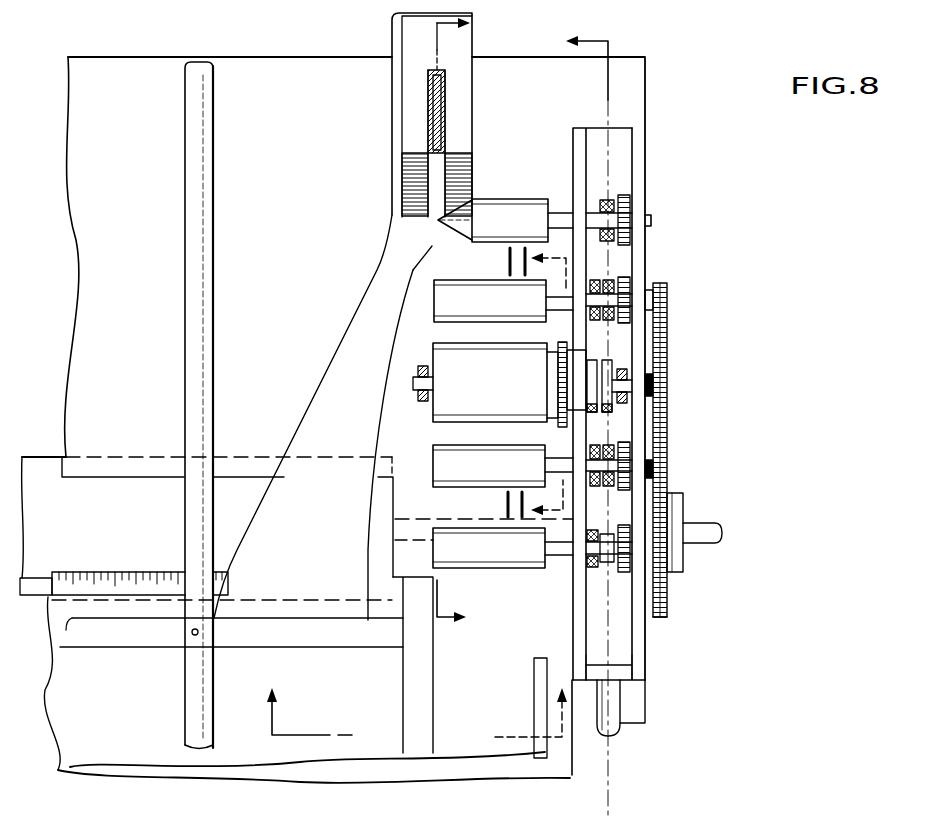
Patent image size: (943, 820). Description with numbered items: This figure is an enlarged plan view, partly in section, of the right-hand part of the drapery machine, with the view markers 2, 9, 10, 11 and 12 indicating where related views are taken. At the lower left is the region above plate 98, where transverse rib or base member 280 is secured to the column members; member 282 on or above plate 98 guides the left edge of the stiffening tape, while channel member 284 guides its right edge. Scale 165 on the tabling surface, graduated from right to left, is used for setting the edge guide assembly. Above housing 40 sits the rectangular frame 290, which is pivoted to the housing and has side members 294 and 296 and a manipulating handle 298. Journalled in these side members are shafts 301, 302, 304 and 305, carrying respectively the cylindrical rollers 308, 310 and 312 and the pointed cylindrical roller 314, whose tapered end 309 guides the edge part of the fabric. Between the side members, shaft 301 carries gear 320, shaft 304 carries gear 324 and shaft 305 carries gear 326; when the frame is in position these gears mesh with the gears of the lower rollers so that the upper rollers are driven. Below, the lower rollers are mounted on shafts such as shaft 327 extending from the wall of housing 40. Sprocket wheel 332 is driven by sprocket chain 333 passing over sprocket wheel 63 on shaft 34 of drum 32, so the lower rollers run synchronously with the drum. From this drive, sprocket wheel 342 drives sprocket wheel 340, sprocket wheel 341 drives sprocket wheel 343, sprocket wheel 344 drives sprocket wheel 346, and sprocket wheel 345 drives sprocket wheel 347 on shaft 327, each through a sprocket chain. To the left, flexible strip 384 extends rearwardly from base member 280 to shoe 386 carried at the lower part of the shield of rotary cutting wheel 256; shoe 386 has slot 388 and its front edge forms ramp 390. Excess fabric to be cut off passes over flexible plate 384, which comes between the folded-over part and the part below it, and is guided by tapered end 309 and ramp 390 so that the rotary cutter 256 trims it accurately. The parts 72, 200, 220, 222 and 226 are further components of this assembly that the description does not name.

The housing 2 is at (413, 90).
The section line 9- 9 is at (570, 427).
The section line 10- 10 is at (472, 326).
The section line 11- 11 is at (537, 382).
The section line 12- 12 is at (409, 702).
The drum 32 is at (393, 504).
The shaft 34 is at (723, 534).
The housing 40 is at (571, 768).
The sprocket wheel 63 is at (667, 607).
The rod 72 is at (187, 709).
The plate 98 is at (356, 720).
The scale 165 is at (88, 572).
The motor 200 is at (511, 383).
The bearing 220 is at (416, 400).
The shaft 222 is at (624, 375).
The bearing 226 is at (622, 399).
The rotary cutting wheel 256 is at (444, 96).
The transverse rib 280 is at (345, 640).
The guide member 282 is at (427, 661).
The channel member 284 is at (534, 713).
The rectangular frame 290 is at (650, 115).
The side member 294 is at (580, 142).
The side member 296 is at (637, 157).
The manipulating handle 298 is at (612, 738).
The shaft 301 is at (606, 562).
The shaft 302 is at (613, 468).
The shaft 304 is at (603, 282).
The shaft 305 is at (598, 215).
The cylindrical roller 308 is at (505, 562).
The tapered end 309 is at (460, 228).
The cylindrical roller 310 is at (505, 476).
The cylindrical roller 312 is at (505, 312).
The pointed cylindrical roller 314 is at (529, 226).
The gear 320 is at (621, 573).
The gear 324 is at (628, 288).
The gear 326 is at (630, 205).
The shaft 327 is at (628, 455).
The sprocket wheel 332 is at (668, 292).
The sprocket chain 333 is at (663, 387).
The sprocket wheel 340 is at (607, 204).
The sprocket wheel 341 is at (596, 322).
The sprocket wheel 342 is at (612, 325).
The sprocket wheel 343 is at (588, 418).
The sprocket wheel 344 is at (613, 420).
The sprocket wheel 345 is at (609, 506).
The sprocket wheel 346 is at (602, 490).
The sprocket wheel 347 is at (588, 568).
The flexible strip 384 is at (367, 322).
The shoe 386 is at (410, 190).
The slot 388 is at (436, 210).
The ramp 390 is at (458, 165).